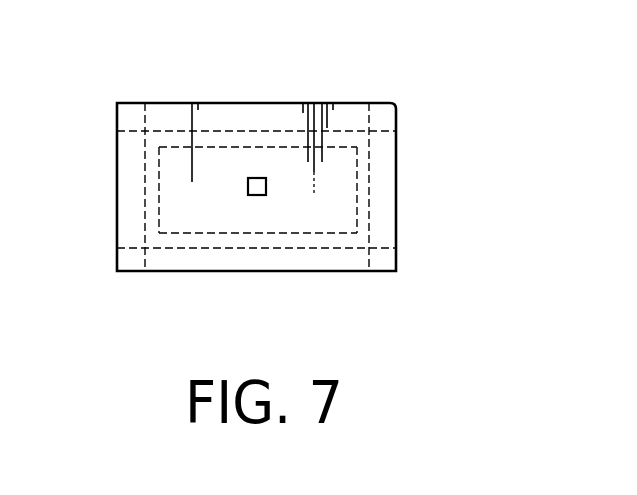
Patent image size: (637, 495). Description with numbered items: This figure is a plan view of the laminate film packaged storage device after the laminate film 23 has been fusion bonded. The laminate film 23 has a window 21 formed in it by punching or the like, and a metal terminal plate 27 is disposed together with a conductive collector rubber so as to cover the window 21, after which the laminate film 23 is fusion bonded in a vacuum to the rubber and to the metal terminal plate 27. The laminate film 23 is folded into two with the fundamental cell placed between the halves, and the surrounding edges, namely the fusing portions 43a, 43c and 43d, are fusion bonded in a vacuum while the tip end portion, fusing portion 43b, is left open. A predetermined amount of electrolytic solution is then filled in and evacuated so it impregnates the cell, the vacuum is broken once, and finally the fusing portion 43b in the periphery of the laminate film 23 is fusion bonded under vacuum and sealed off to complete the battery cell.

The window 21 is at (248, 187).
The laminate film 23 is at (385, 103).
The metal terminal plate 27 is at (334, 130).
The fusing portion 43a is at (283, 118).
The fusing portion 43b is at (131, 190).
The fusing portion 43c is at (383, 185).
The fusing portion 43d is at (263, 260).